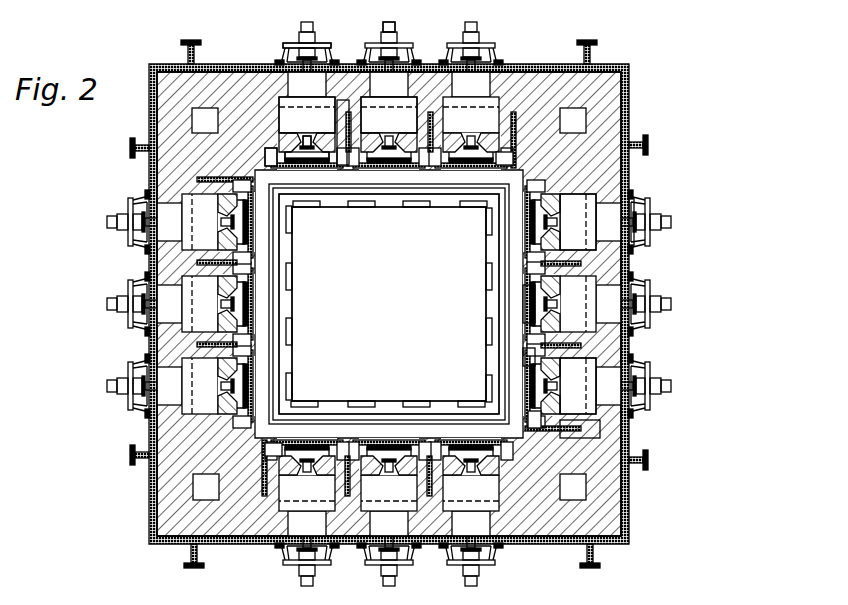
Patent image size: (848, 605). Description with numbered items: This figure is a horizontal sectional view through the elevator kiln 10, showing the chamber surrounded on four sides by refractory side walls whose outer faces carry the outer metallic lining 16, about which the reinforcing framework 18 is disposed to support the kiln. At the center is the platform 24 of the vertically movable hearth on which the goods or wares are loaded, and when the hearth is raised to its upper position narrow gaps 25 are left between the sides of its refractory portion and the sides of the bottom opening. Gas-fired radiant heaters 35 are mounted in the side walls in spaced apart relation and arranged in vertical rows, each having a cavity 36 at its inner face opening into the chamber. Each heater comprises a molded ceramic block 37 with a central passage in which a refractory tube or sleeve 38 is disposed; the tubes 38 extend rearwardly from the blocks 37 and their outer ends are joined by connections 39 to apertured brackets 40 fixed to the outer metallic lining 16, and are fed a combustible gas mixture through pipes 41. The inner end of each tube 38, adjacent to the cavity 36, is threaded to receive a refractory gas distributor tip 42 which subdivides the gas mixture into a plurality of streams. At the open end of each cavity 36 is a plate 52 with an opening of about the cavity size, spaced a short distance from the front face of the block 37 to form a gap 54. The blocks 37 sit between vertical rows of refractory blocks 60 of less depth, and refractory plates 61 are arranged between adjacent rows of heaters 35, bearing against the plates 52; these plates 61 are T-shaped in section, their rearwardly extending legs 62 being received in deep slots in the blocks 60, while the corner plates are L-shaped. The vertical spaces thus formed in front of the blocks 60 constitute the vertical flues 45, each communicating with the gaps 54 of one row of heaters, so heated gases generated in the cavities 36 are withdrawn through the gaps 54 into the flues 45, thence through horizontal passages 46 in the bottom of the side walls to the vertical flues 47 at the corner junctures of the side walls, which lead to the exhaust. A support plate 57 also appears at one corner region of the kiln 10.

The elevator kiln 10 is at (634, 268).
The outer metallic lining 16 is at (630, 106).
The reinforcing framework 18 is at (203, 43).
The platform 24 is at (389, 304).
The narrow gaps 25 is at (330, 420).
The gas-fired radiant heaters 35 is at (324, 168).
The cavity 36 is at (526, 320).
The molded block 37 is at (326, 104).
The tube or sleeve 38 is at (387, 240).
The connections 39 is at (651, 205).
The apertured brackets 40 is at (328, 44).
The pipes 41 is at (397, 27).
The gas distributor tip 42 is at (284, 216).
The vertical flues 45 is at (524, 252).
The horizontal passages 46 is at (532, 68).
The vertical flues 47 is at (389, 304).
The plate 52 is at (260, 282).
The gap 54 is at (526, 362).
The support plate 57 is at (637, 432).
The refractory blocks 60 is at (540, 398).
The refractory plates 61 is at (262, 246).
The rearwardly extending legs 62 is at (548, 262).